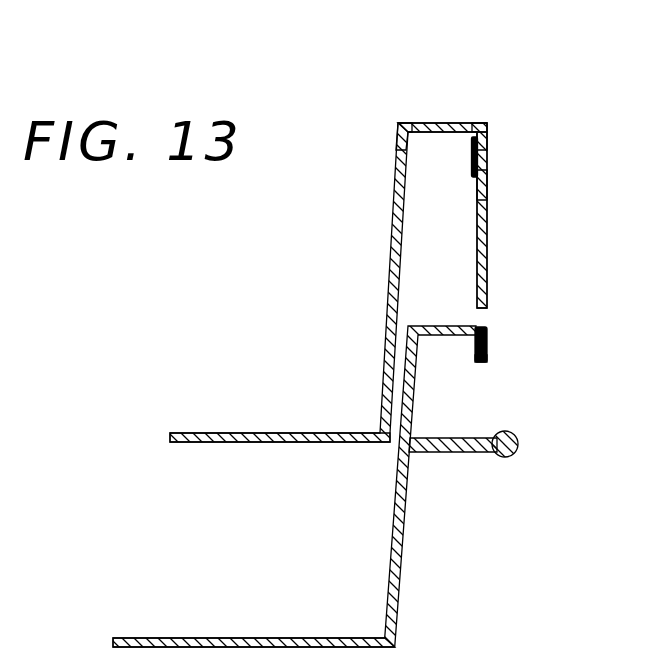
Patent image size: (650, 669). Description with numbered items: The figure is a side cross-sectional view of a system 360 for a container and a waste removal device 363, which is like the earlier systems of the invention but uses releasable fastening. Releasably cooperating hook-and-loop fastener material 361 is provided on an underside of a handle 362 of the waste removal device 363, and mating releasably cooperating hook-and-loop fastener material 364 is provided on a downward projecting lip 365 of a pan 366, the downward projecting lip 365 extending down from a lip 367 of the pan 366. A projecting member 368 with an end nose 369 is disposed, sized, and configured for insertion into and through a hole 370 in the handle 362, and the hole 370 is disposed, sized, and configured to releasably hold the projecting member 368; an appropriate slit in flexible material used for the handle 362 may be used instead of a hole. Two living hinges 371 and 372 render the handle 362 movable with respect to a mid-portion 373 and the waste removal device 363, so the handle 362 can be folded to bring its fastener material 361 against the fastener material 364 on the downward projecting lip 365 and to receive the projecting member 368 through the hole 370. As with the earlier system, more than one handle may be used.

The system 360 is at (383, 251).
The hook-and-loop fastener material 361 is at (473, 157).
The handle 362 is at (488, 183).
The waste removal device 363 is at (247, 432).
The hook-and-loop fastener material 364 is at (487, 347).
The downward projecting lip 365 is at (471, 361).
The pan 366 is at (257, 637).
The lip 367 is at (443, 326).
The projecting member 368 is at (457, 453).
The end nose 369 is at (518, 446).
The hole 370 is at (488, 253).
The living hinge 371 is at (404, 130).
The living hinge 372 is at (487, 124).
The mid-portion 373 is at (441, 123).